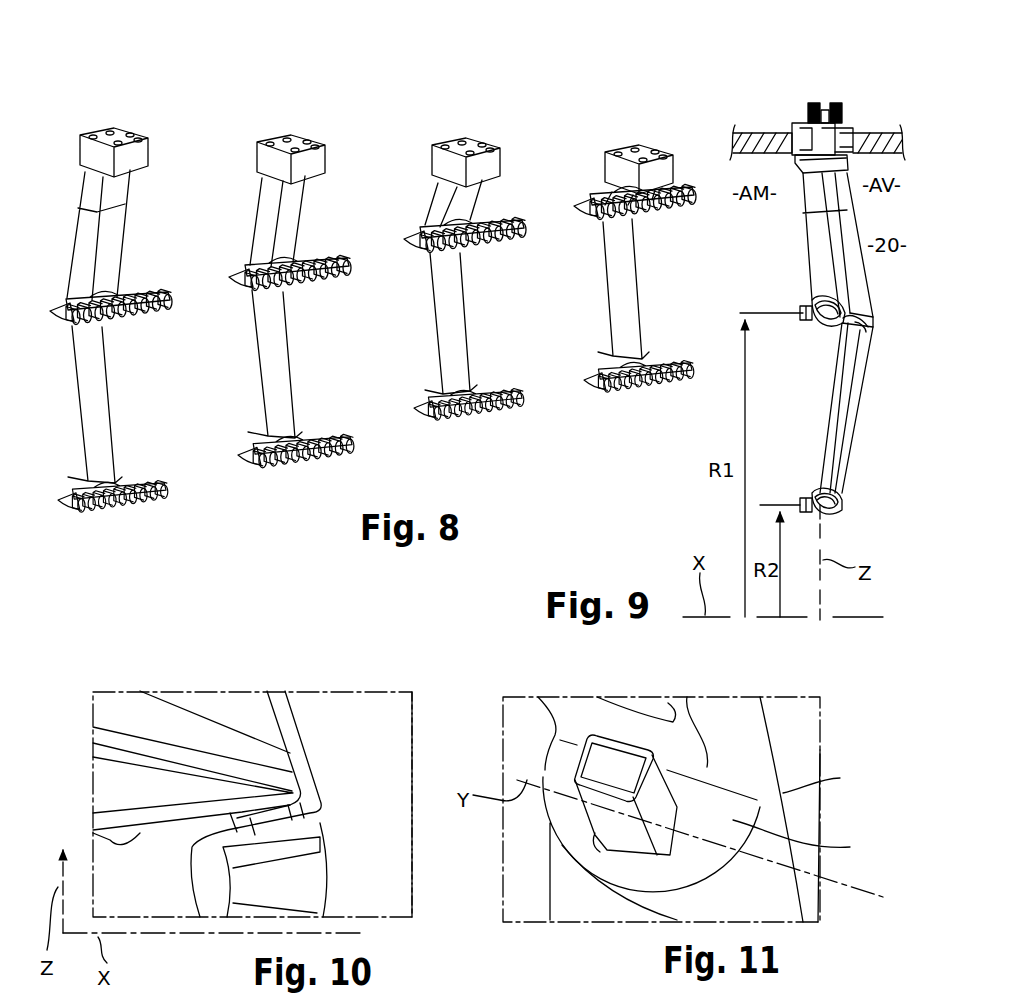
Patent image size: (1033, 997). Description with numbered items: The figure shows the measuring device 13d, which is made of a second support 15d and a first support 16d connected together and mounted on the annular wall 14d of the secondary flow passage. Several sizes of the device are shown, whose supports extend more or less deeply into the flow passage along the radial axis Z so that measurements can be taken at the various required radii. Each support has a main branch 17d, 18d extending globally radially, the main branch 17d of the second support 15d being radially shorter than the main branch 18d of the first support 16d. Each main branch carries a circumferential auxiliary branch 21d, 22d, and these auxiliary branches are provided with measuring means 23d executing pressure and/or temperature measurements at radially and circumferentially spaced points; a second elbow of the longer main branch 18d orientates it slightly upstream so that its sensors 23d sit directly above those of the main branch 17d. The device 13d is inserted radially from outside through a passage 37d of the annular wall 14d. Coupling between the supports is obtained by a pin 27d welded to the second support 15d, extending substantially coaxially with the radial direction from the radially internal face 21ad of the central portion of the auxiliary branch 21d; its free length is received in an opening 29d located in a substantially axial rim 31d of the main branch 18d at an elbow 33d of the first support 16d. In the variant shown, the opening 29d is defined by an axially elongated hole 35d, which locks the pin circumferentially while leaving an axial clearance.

In FIG. 9, the measuring device 13d is at (847, 118).
In FIG. 9, the annular wall 14d is at (757, 133).
In FIG. 9, the passage 37d is at (865, 130).
In FIG. 8, the second support 15d is at (73, 250).
In FIG. 9, the second support 15d is at (808, 287).
In FIG. 10, the second support 15d is at (92, 715).
In FIG. 8, the first support 16d is at (72, 373).
In FIG. 9, the first support 16d is at (870, 403).
In FIG. 10, the first support 16d is at (345, 685).
In FIG. 11, the first support 16d is at (823, 758).
In FIG. 9, the main branch 17d is at (817, 250).
In FIG. 10, the main branch 17d is at (237, 717).
In FIG. 9, the main branch 18d is at (850, 427).
In FIG. 11, the main branch 18d is at (725, 720).
In FIG. 8, the auxiliary branch 21d is at (227, 277).
In FIG. 9, the auxiliary branch 21d is at (822, 323).
In FIG. 10, the auxiliary branch 21d is at (128, 782).
In FIG. 10, the radially internal face 21ad is at (100, 837).
In FIG. 8, the auxiliary branch 22d is at (237, 460).
In FIG. 9, the auxiliary branch 22d is at (827, 510).
In FIG. 8, the measuring means 23d is at (150, 317).
In FIG. 9, the measuring means 23d is at (805, 323).
In FIG. 9, the pin 27d is at (843, 320).
In FIG. 10, the pin 27d is at (200, 837).
In FIG. 11, the pin 27d is at (615, 762).
In FIG. 11, the opening 29d is at (606, 855).
In FIG. 11, the rim 31d is at (830, 847).
In FIG. 11, the elbow 33d is at (840, 778).
In FIG. 11, the hole 35d is at (702, 720).